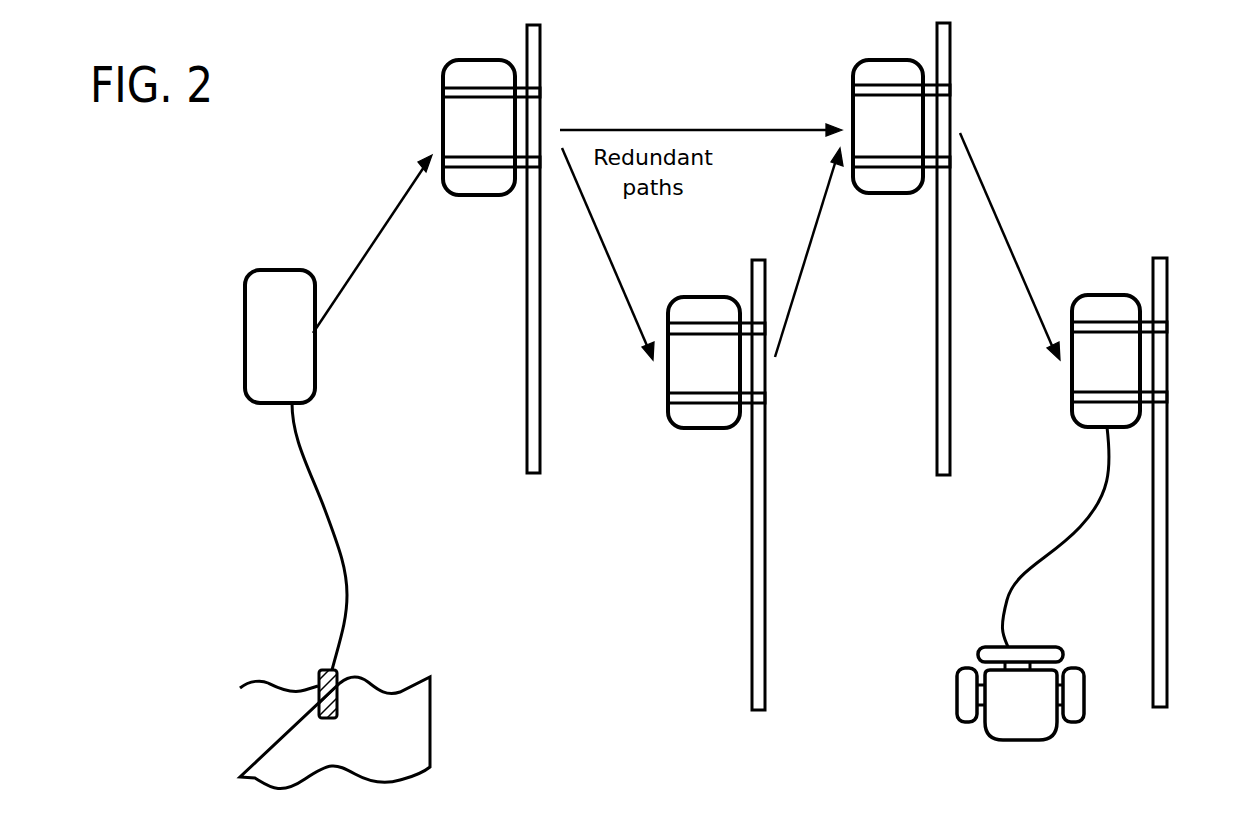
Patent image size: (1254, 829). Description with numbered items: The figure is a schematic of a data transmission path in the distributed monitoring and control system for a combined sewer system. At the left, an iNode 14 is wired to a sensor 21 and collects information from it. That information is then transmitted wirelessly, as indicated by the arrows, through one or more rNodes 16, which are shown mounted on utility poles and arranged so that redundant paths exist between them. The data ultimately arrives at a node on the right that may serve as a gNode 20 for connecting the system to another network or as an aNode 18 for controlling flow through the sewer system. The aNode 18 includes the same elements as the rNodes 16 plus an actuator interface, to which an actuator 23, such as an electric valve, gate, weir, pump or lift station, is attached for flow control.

The iNode 14 is at (268, 403).
The rNode 16 is at (480, 195).
The aNode 18 is at (1107, 295).
The gNode 20 is at (1143, 357).
The sensor 21 is at (318, 680).
The actuator 23 is at (1042, 647).